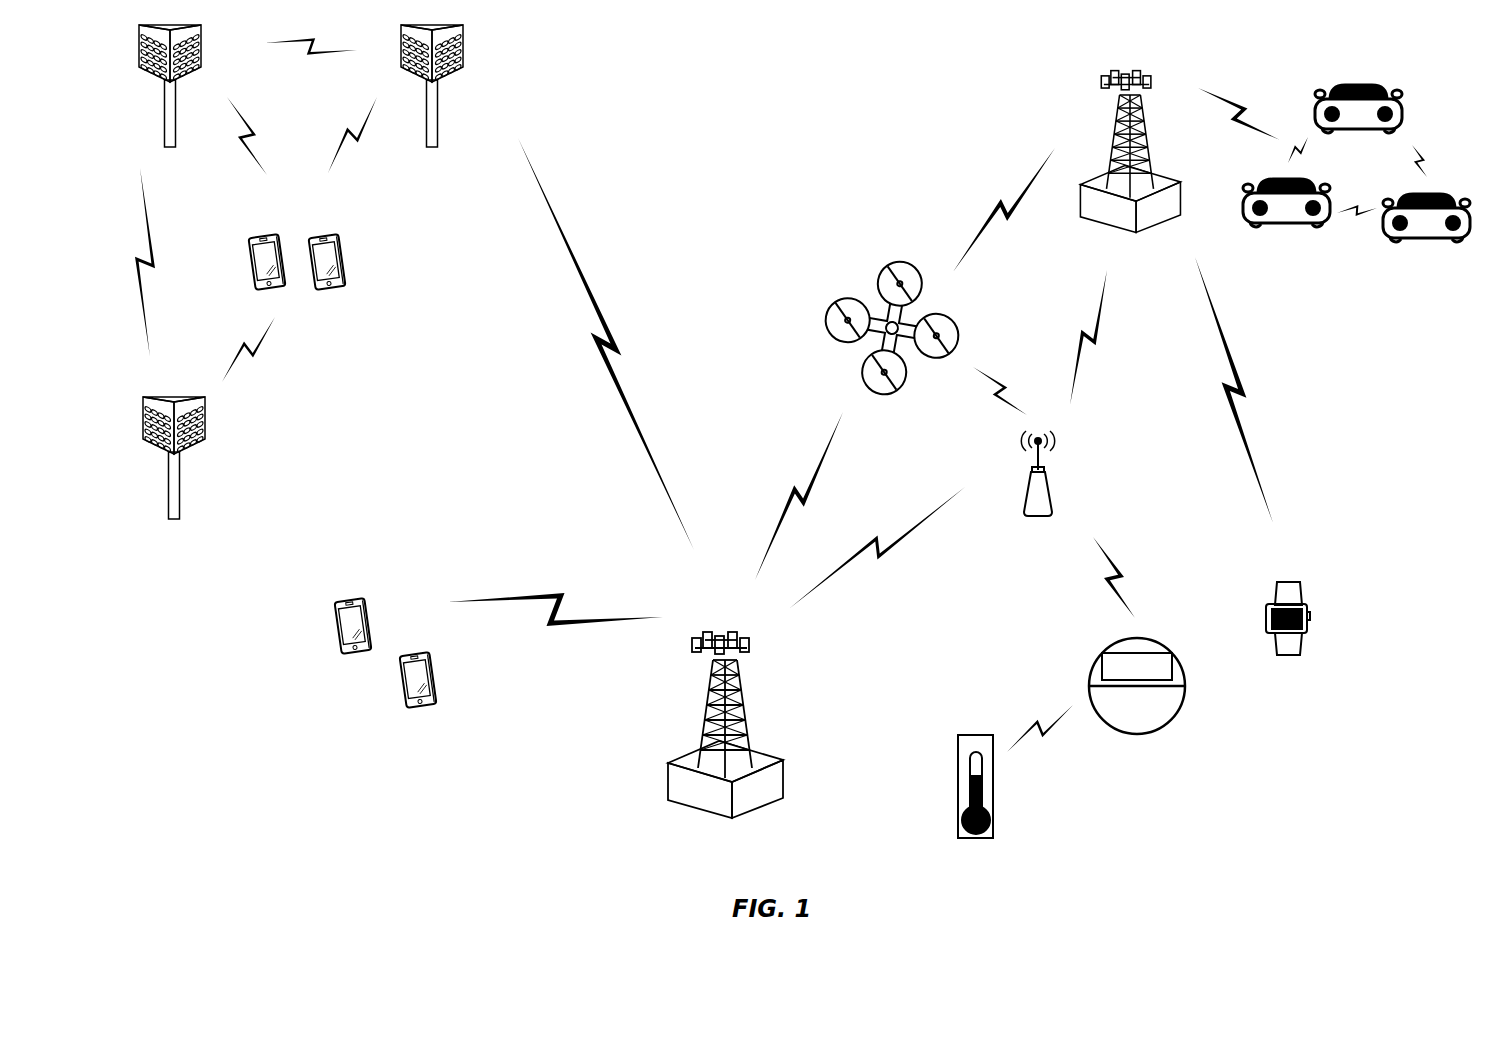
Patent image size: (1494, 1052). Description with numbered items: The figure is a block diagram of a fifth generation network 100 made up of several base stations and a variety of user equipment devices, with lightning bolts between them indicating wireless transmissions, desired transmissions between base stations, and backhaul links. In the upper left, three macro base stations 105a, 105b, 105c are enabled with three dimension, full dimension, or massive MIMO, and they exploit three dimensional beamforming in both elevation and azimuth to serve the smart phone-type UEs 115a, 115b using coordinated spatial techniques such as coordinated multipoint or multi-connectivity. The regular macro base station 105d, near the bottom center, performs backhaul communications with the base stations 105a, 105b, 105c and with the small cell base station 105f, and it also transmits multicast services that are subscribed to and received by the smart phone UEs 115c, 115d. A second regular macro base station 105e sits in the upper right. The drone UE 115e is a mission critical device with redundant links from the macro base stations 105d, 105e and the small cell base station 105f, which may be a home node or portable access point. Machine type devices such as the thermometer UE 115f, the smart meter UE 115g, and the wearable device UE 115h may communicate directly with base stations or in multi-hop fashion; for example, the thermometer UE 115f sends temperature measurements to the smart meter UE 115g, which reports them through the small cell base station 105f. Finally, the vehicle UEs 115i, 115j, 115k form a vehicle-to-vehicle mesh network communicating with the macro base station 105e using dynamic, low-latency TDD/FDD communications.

The 5G network 100 is at (885, 57).
The macro base station 105a is at (166, 122).
The macro base station 105b is at (438, 120).
The macro base station 105c is at (168, 508).
The macro base station 105d is at (690, 806).
The macro base station 105e is at (1095, 226).
The small cell base station 105f is at (1025, 511).
The UE 115a is at (262, 242).
The UE 115b is at (341, 256).
The UE 115c is at (340, 611).
The UE 115d is at (432, 674).
The UE (drone) 115e is at (830, 320).
The UE (thermometer) 115f is at (992, 830).
The UE (smart meter) 115g is at (1160, 728).
The UE (wearable device) 115h is at (1300, 652).
The UE (vehicle) 115i is at (1375, 87).
The UE (vehicle) 115j is at (1452, 244).
The UE (vehicle) 115k is at (1262, 228).